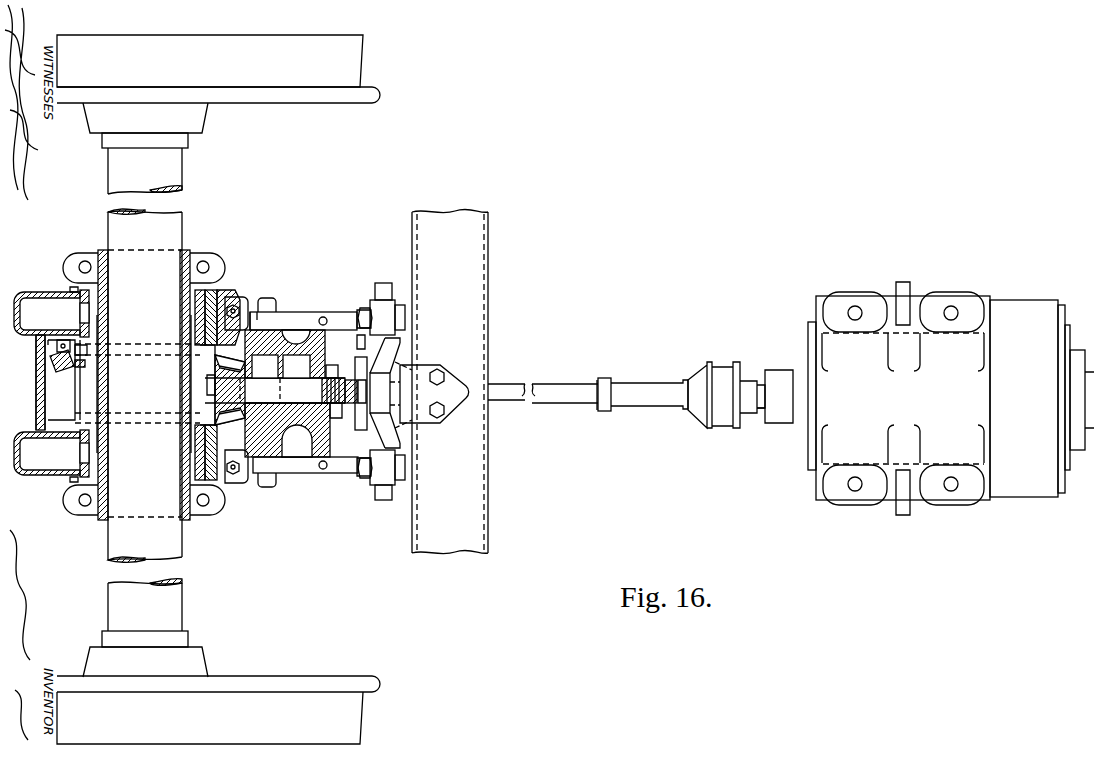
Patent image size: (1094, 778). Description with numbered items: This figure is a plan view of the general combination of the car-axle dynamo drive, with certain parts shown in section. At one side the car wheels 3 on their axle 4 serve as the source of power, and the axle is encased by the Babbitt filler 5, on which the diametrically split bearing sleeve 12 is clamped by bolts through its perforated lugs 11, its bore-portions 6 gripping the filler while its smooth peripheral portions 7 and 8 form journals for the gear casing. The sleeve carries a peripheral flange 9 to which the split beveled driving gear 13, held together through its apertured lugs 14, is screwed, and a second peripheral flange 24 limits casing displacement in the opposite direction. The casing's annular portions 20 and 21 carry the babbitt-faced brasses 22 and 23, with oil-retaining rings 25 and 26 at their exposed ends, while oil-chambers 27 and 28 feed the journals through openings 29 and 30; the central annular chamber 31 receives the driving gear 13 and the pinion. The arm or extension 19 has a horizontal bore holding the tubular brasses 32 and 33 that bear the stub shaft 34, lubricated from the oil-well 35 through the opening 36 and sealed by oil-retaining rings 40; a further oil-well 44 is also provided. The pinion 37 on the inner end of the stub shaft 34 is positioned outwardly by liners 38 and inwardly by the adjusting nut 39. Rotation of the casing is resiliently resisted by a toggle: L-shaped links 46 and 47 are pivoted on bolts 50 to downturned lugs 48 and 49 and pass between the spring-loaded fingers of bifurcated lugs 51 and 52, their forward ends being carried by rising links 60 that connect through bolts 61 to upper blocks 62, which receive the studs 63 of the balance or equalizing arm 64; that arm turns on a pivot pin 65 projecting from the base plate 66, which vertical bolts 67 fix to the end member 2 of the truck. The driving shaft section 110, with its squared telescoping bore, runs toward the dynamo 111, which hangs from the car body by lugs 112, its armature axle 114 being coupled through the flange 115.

The end member 2 is at (450, 381).
The car wheels 3 is at (218, 389).
The axle 4 is at (155, 180).
The Babbitt filler 5 is at (183, 520).
The bore-portions 6 is at (190, 268).
The peripheral portion 7 is at (197, 298).
The peripheral portion 8 is at (205, 468).
The peripheral flange 9 is at (88, 348).
The lugs 11 is at (214, 506).
The bearing sleeve 12 is at (92, 520).
The driving gear 13 is at (58, 368).
The apertured lugs 14 is at (245, 330).
The arm or extension 19 is at (297, 425).
The annular portion 20 is at (218, 312).
The annular portion 21 is at (236, 469).
The brass 22 is at (205, 315).
The brass 23 is at (197, 439).
The peripheral flange 24 is at (72, 400).
The oil-retaining ring 25 is at (70, 288).
The oil-retaining ring 26 is at (70, 480).
The oil-chamber 27 is at (47, 313).
The oil-chamber 28 is at (47, 453).
The opening 29 is at (82, 313).
The opening 30 is at (82, 452).
The central annular chamber 31 is at (41, 388).
The tubular brass 32 is at (275, 390).
The tubular brass 33 is at (321, 390).
The stub shaft 34 is at (340, 375).
The oil-well 35 is at (285, 354).
The opening 36 is at (296, 366).
The pinion 37 is at (205, 379).
The liners 38 is at (230, 390).
The adjusting nut 39 is at (340, 405).
The oil-retaining rings 40 is at (337, 420).
The oil-well 44 is at (349, 340).
The link 46 is at (300, 312).
The link 47 is at (298, 473).
The downturned lug 48 is at (272, 312).
The downturned lug 49 is at (287, 430).
The bolts 50 is at (260, 298).
The bifurcated lug 51 is at (323, 316).
The bifurcated lug 52 is at (323, 470).
The links 60 is at (372, 304).
The bolts 61 is at (394, 276).
The upper blocks 62 is at (382, 392).
The studs 63 is at (358, 320).
The balance or equalizing arm 64 is at (392, 350).
The pivot pin 65 is at (364, 372).
The base plate 66 is at (429, 395).
The vertical bolts 67 is at (440, 374).
The driving shaft section 110 is at (626, 395).
The dynamo 111 is at (951, 398).
The lugs 112 is at (949, 300).
The armature axle 114 is at (757, 390).
The flange 115 is at (752, 410).